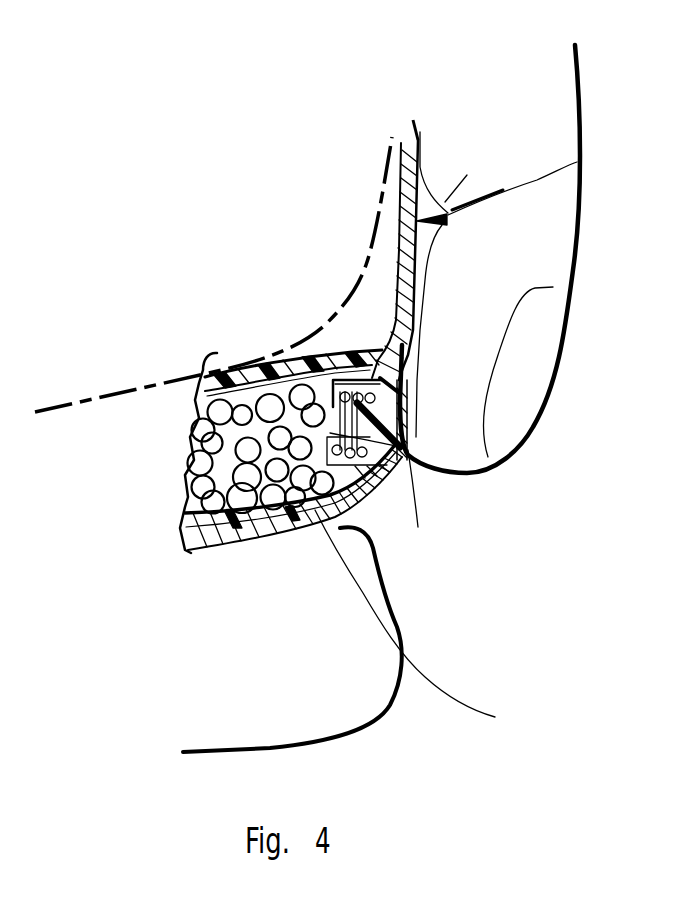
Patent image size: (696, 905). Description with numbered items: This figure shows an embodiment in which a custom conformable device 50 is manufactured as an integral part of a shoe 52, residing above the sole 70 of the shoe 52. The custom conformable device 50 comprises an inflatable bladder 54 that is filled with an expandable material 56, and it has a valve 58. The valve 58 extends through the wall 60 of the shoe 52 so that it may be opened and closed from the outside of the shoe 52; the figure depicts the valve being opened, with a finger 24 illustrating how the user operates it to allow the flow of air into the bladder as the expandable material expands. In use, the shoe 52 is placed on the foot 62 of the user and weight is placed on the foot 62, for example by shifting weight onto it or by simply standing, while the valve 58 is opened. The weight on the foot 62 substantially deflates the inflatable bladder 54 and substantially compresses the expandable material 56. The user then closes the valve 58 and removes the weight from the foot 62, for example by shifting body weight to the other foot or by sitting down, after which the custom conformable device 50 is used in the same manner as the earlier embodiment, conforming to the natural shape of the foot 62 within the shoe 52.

The finger 24 is at (545, 111).
The custom conformable device 50 is at (147, 498).
The shoe 52 is at (577, 162).
The inflatable bladder 54 is at (418, 622).
The expandable material 56 is at (293, 474).
The valve 58 is at (405, 422).
The wall 60 is at (407, 277).
The foot 62 is at (334, 318).
The sole 70 is at (333, 693).